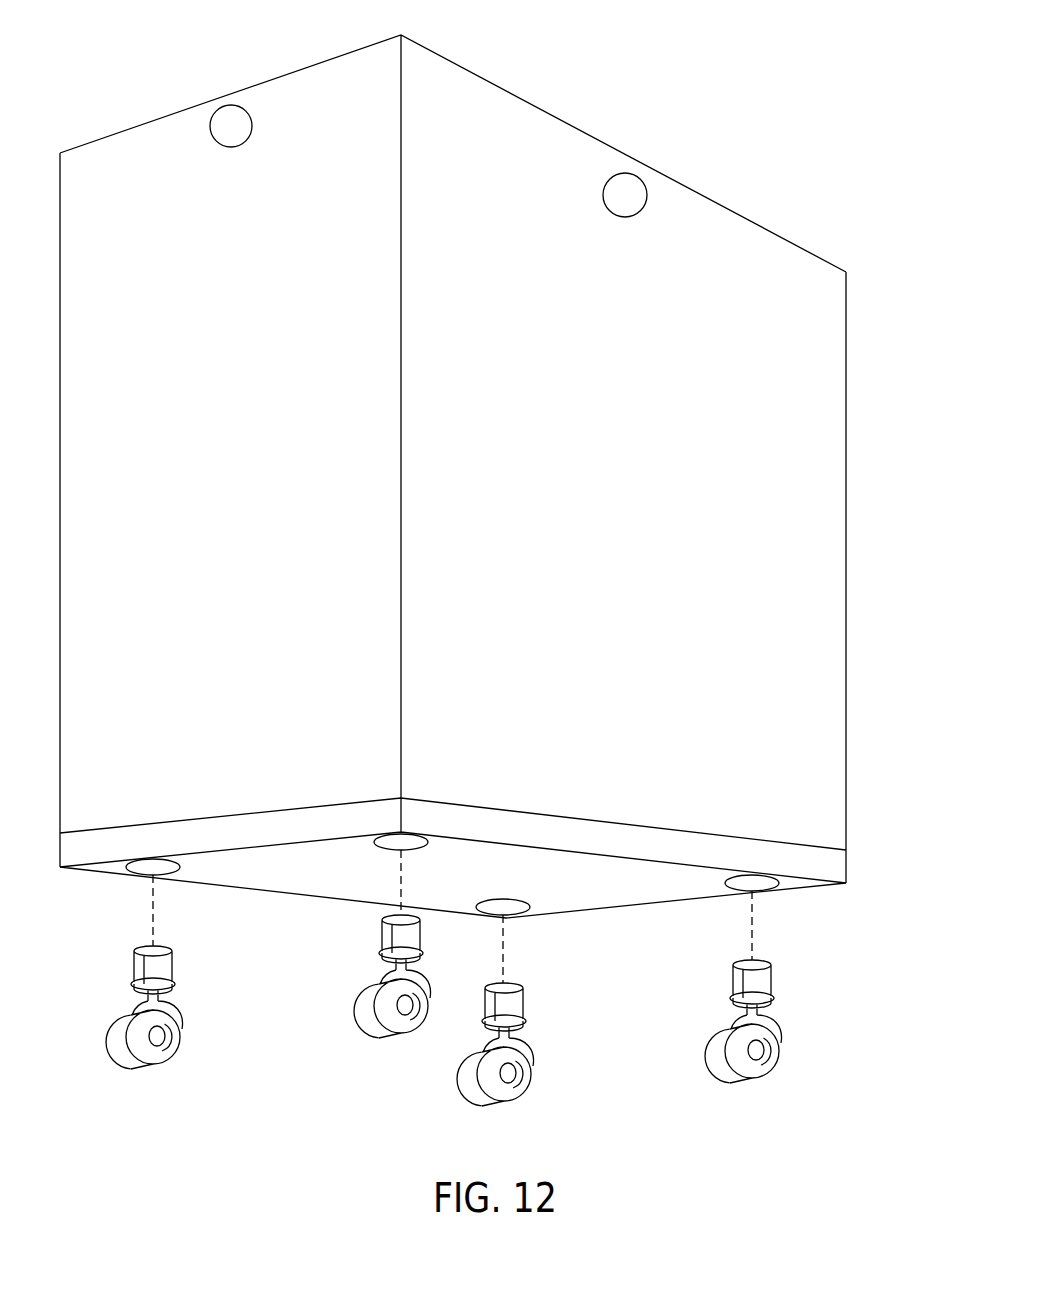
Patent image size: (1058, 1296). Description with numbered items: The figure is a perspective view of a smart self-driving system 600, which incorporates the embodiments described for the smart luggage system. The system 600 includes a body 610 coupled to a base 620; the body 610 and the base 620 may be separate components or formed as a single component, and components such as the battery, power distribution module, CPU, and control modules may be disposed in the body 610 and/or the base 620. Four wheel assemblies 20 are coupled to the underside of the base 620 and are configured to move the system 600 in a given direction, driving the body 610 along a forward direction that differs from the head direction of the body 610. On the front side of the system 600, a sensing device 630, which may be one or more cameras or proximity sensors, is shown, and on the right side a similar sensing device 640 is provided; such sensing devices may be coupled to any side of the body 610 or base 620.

The smart self-driving system 600 is at (499, 465).
The body 610 is at (847, 355).
The base 620 is at (835, 867).
The sensing device 630 is at (232, 125).
The sensing device 640 is at (632, 193).
The wheel assemblies 20 is at (152, 1064).